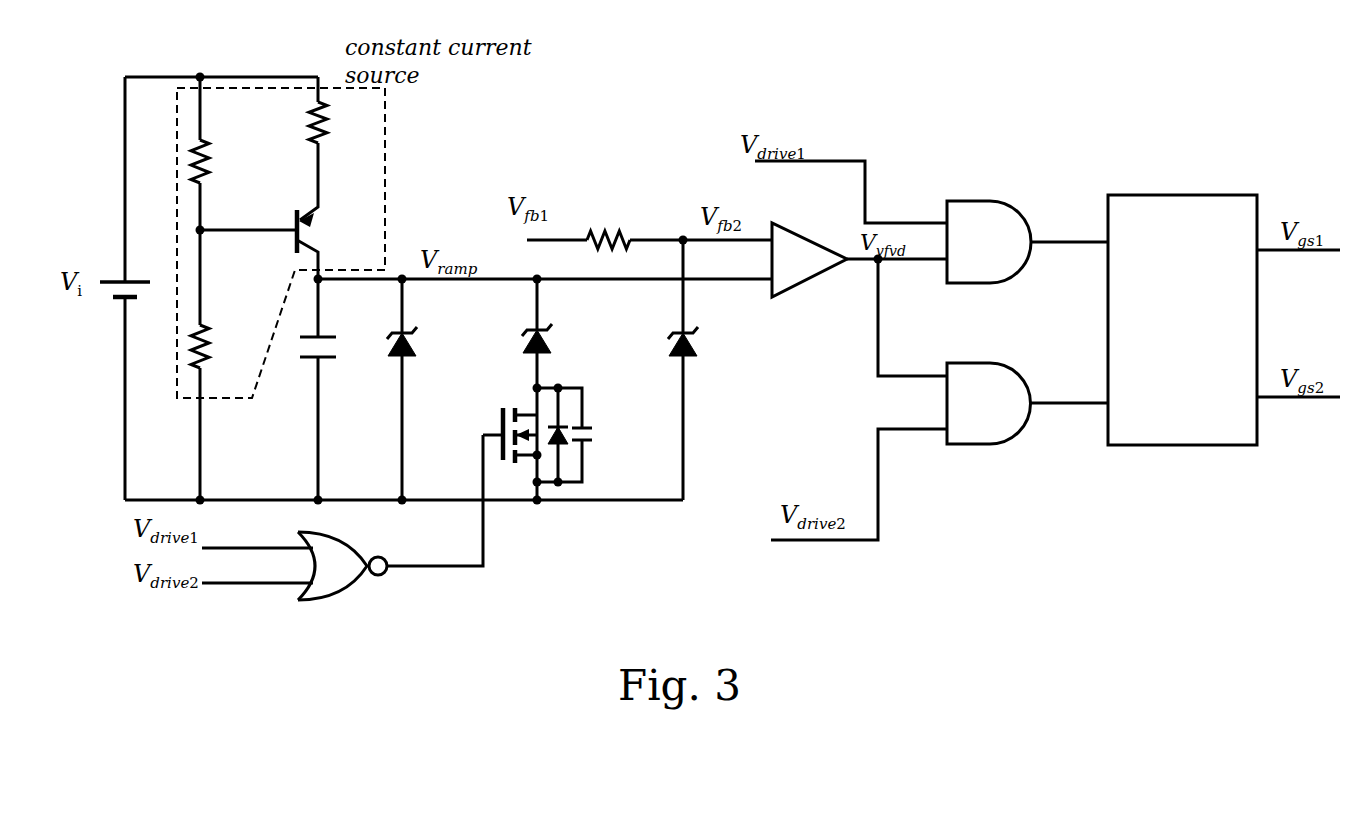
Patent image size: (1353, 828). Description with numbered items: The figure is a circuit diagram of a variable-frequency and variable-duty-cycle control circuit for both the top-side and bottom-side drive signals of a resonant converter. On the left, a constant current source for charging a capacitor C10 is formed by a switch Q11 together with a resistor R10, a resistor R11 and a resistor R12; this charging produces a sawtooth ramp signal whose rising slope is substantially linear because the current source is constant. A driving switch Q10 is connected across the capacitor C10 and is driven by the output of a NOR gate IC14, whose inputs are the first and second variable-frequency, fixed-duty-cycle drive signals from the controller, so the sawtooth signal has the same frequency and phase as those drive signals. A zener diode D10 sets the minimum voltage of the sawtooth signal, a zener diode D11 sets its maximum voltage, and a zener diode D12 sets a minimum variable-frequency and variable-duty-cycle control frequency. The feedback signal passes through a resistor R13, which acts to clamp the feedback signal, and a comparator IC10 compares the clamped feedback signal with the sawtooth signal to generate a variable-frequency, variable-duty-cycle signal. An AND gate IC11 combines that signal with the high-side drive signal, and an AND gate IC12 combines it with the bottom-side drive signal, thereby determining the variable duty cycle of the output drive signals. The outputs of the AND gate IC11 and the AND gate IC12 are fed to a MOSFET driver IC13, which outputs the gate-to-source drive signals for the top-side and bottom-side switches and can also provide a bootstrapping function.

The resistor R10 is at (347, 112).
The resistor R11 is at (226, 161).
The resistor R12 is at (226, 346).
The resistor R13 is at (608, 223).
The capacitor C10 is at (302, 389).
The switch Q11 is at (334, 211).
The driving switch Q10 is at (571, 442).
The zener diode D10 is at (567, 333).
The zener diode D11 is at (427, 389).
The zener diode D12 is at (709, 370).
The comparator IC10 is at (809, 277).
The AND gate IC11 is at (989, 269).
The AND gate IC12 is at (989, 432).
The MOSFET driver IC13 is at (1182, 353).
The NOR gate IC14 is at (342, 587).